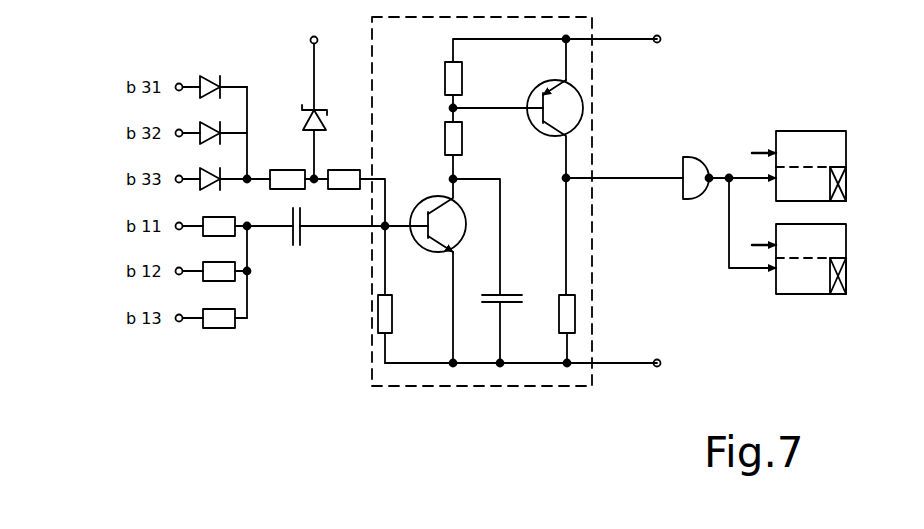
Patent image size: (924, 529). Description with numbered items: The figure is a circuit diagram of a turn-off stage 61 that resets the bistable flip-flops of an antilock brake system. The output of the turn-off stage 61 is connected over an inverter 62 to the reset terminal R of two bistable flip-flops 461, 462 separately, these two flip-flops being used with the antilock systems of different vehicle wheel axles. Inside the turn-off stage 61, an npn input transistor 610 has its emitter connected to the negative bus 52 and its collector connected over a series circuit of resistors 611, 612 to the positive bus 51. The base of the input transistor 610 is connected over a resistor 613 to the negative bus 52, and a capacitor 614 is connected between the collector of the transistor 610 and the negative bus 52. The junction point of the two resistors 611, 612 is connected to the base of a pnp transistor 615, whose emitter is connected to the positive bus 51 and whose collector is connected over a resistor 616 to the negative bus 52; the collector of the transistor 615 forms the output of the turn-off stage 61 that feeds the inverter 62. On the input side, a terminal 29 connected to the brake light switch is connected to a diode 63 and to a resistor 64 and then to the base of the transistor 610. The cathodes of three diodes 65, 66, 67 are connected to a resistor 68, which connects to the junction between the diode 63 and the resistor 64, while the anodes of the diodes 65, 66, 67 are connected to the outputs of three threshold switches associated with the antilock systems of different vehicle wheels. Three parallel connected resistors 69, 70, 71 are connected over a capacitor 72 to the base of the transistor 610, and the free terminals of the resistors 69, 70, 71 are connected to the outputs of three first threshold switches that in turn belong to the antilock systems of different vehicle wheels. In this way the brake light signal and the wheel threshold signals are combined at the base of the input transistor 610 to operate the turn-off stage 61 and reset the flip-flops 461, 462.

The terminal 29 is at (311, 36).
The positive bus 51 is at (661, 39).
The negative bus 52 is at (661, 363).
The turn-off stage 61 is at (438, 378).
The inverter 62 is at (700, 196).
The diode 63 is at (320, 128).
The resistor 64 is at (346, 187).
The diode 65 is at (206, 78).
The diode 66 is at (226, 126).
The diode 67 is at (226, 172).
The resistor 68 is at (288, 174).
The resistor 69 is at (214, 226).
The resistor 70 is at (222, 267).
The resistor 71 is at (224, 325).
The capacitor 72 is at (297, 238).
The npn input transistor 610 is at (431, 250).
The resistor 611 is at (460, 140).
The resistor 612 is at (460, 82).
The resistor 613 is at (392, 316).
The capacitor 614 is at (505, 292).
The pnp transistor 615 is at (543, 130).
The resistor 616 is at (559, 316).
The bistable flip-flop 461 is at (844, 160).
The bistable flip-flop 462 is at (844, 249).